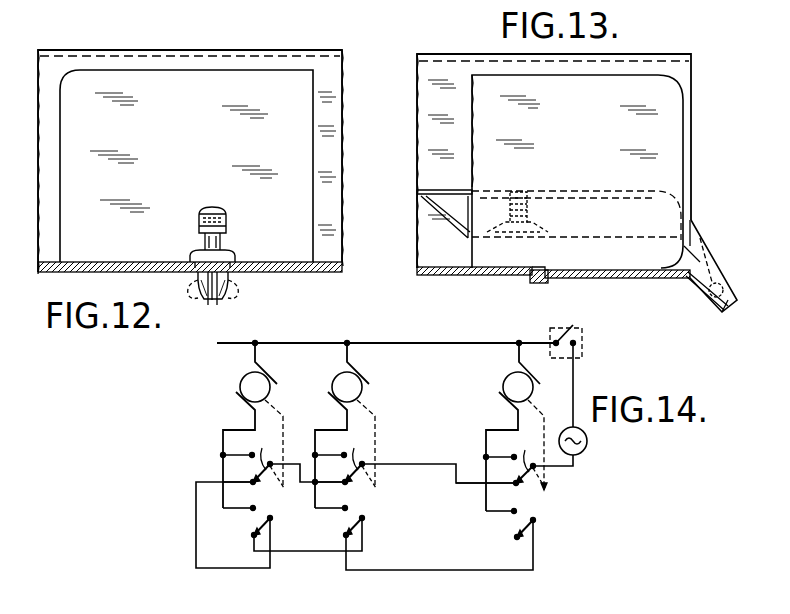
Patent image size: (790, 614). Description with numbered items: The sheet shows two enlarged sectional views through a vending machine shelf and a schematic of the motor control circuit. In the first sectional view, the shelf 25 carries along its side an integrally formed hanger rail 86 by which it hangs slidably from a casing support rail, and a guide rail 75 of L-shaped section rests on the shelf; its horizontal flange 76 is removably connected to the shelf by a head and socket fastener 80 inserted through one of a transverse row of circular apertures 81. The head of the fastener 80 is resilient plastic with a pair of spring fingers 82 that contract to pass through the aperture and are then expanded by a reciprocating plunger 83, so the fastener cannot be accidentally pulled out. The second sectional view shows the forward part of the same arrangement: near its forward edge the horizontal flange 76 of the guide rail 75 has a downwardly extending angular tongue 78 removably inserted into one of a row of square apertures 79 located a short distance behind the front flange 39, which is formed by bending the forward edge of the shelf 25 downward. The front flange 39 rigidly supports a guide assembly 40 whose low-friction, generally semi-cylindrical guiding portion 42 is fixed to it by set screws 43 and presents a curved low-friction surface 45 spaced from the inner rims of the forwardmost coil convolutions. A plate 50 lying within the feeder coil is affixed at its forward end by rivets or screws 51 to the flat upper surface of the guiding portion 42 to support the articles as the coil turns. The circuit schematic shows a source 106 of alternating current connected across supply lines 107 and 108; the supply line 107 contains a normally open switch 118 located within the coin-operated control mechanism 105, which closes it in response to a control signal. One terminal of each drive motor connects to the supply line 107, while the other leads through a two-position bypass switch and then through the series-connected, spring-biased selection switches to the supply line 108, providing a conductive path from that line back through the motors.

In FIG. 12, the shelf 25 is at (343, 272).
In FIG. 12, the hanger rail 86 is at (131, 56).
In FIG. 13, the hanger rail 86 is at (460, 61).
In FIG. 12, the guide rail 75 is at (204, 150).
In FIG. 13, the guide rail 75 is at (588, 150).
In FIG. 12, the horizontal flange 76 is at (126, 262).
In FIG. 13, the horizontal flange 76 is at (480, 268).
In FIG. 12, the circular aperture 81 is at (196, 268).
In FIG. 12, the reciprocating plunger 83 is at (222, 246).
In FIG. 12, the head and socket fastener 80 is at (228, 300).
In FIG. 12, the spring finger 82 is at (186, 292).
In FIG. 13, the angular tongue 78 is at (537, 283).
In FIG. 13, the square aperture 79 is at (510, 276).
In FIG. 13, the plate 50 is at (446, 190).
In FIG. 13, the curved low-friction surface 45 is at (590, 237).
In FIG. 13, the rivet or screw 51 is at (518, 190).
In FIG. 13, the guide assembly 40 is at (732, 268).
In FIG. 13, the guiding portion 42 is at (698, 233).
In FIG. 13, the set screw 43 is at (707, 300).
In FIG. 13, the front flange 39 is at (722, 313).
In FIG. 14, the supply line 107 is at (535, 343).
In FIG. 14, the supply line 108 is at (557, 470).
In FIG. 14, the source of alternating current 106 is at (584, 452).
In FIG. 14, the coin-operated control mechanism 105 is at (584, 345).
In FIG. 14, the normally open switch 118 is at (576, 330).